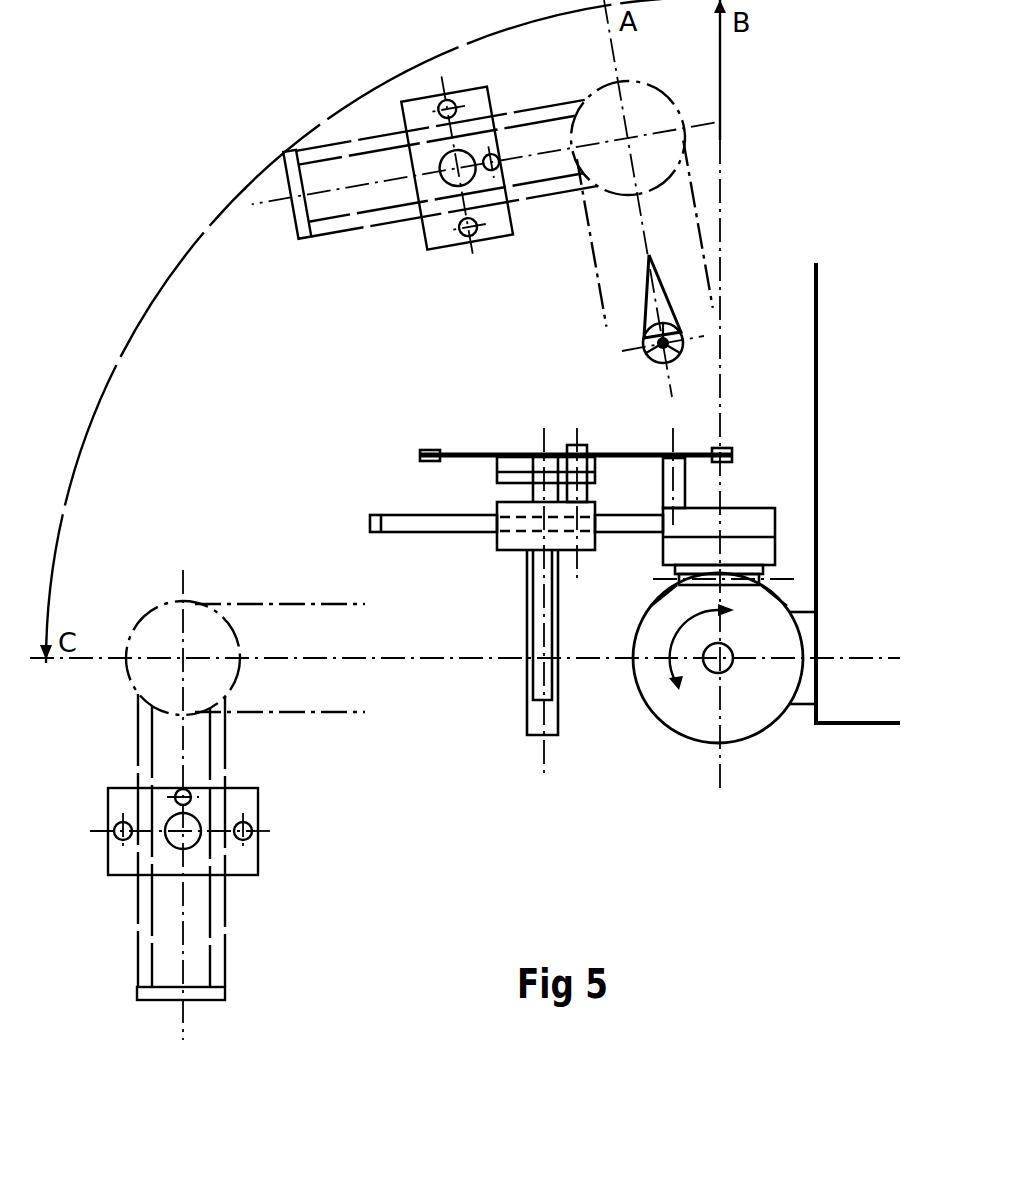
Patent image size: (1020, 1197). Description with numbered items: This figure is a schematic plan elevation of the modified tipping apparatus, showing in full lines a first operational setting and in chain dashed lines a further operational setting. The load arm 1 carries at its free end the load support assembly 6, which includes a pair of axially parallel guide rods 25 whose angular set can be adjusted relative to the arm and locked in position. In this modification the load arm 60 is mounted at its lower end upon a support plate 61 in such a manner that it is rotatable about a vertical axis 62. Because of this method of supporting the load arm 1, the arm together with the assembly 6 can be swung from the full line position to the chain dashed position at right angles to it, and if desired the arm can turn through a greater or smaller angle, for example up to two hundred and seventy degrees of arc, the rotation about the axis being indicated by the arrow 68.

The load arm 1 is at (784, 538).
The load support assembly 6 is at (494, 504).
The guide rods 25 is at (412, 523).
The load arm 60 is at (680, 582).
The support plate 61 is at (683, 737).
The vertical axis 62 is at (732, 651).
The rotation direction arrow 68 is at (701, 661).